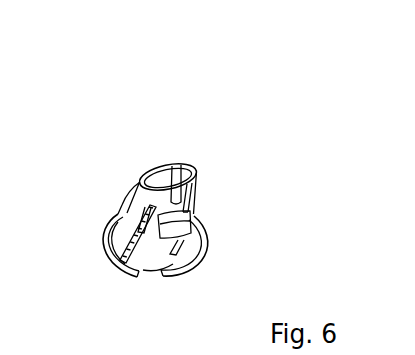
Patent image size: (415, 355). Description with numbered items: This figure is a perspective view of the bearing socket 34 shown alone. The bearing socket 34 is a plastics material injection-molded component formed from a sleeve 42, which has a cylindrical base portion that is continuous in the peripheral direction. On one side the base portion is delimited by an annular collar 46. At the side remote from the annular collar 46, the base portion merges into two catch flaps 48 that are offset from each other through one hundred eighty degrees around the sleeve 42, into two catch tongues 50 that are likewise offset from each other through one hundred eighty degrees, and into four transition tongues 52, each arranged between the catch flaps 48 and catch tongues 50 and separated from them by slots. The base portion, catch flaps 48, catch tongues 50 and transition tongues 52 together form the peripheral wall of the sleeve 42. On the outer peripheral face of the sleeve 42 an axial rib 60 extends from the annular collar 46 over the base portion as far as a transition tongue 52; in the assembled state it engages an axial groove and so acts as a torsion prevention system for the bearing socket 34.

The bearing socket 34 is at (259, 108).
The sleeve 42 is at (154, 263).
The annular collar 46 is at (123, 253).
The catch flaps 48 is at (205, 190).
The catch tongues 50 is at (168, 165).
The transition tongues 52 is at (190, 175).
The axial rib 60 is at (125, 251).